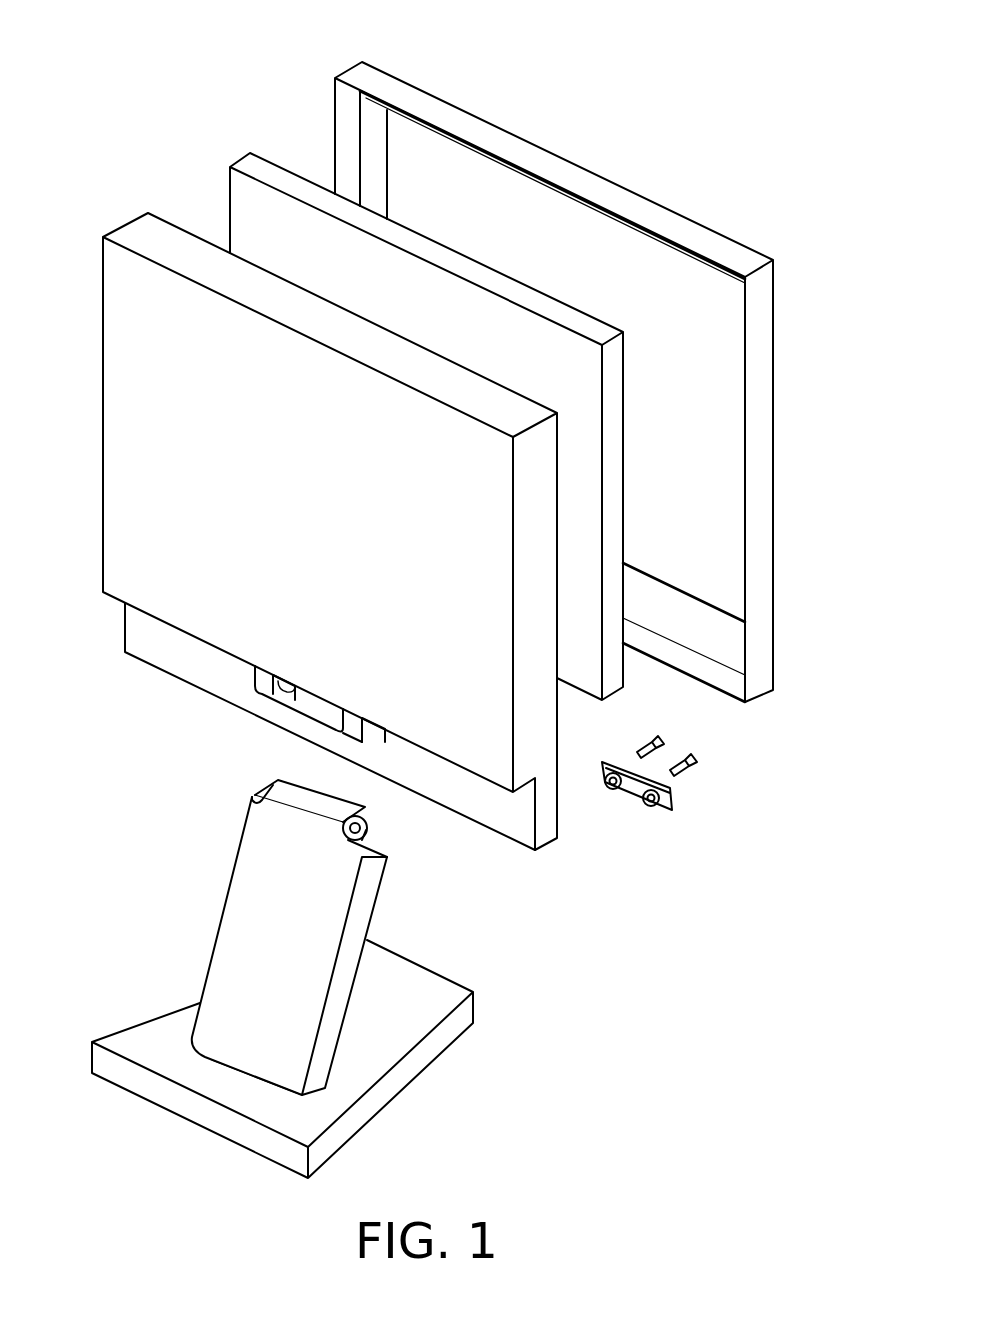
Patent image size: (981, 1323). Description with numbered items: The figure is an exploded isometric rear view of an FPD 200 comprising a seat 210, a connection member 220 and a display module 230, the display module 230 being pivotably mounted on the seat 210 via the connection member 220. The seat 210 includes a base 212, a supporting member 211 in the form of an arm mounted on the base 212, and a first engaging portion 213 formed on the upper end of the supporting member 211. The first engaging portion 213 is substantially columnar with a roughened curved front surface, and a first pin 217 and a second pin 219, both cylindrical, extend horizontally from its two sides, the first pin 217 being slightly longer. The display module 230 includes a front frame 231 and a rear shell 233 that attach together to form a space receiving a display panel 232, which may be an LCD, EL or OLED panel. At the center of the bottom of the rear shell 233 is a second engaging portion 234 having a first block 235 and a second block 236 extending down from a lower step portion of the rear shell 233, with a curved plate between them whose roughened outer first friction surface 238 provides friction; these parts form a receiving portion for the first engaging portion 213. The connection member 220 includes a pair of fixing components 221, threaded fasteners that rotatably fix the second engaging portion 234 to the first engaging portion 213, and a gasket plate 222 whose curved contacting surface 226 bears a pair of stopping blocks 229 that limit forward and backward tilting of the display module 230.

The FPD 200 is at (523, 21).
The seat 210 is at (204, 917).
The supporting member 211 is at (363, 907).
The base 212 is at (432, 993).
The first engaging portion 213 is at (303, 800).
The first pin 217 is at (278, 778).
The second pin 219 is at (358, 833).
The connection member 220 is at (768, 810).
The fixing components 221 is at (685, 763).
The gasket plate 222 is at (667, 813).
The contacting surface 226 is at (633, 790).
The stopping blocks 229 is at (610, 763).
The display module 230 is at (351, 6).
The front frame 231 is at (359, 80).
The display panel 232 is at (263, 170).
The rear shell 233 is at (149, 242).
The second engaging portion 234 is at (303, 700).
The first block 235 is at (263, 683).
The second block 236 is at (371, 729).
The first friction surface 238 is at (317, 698).